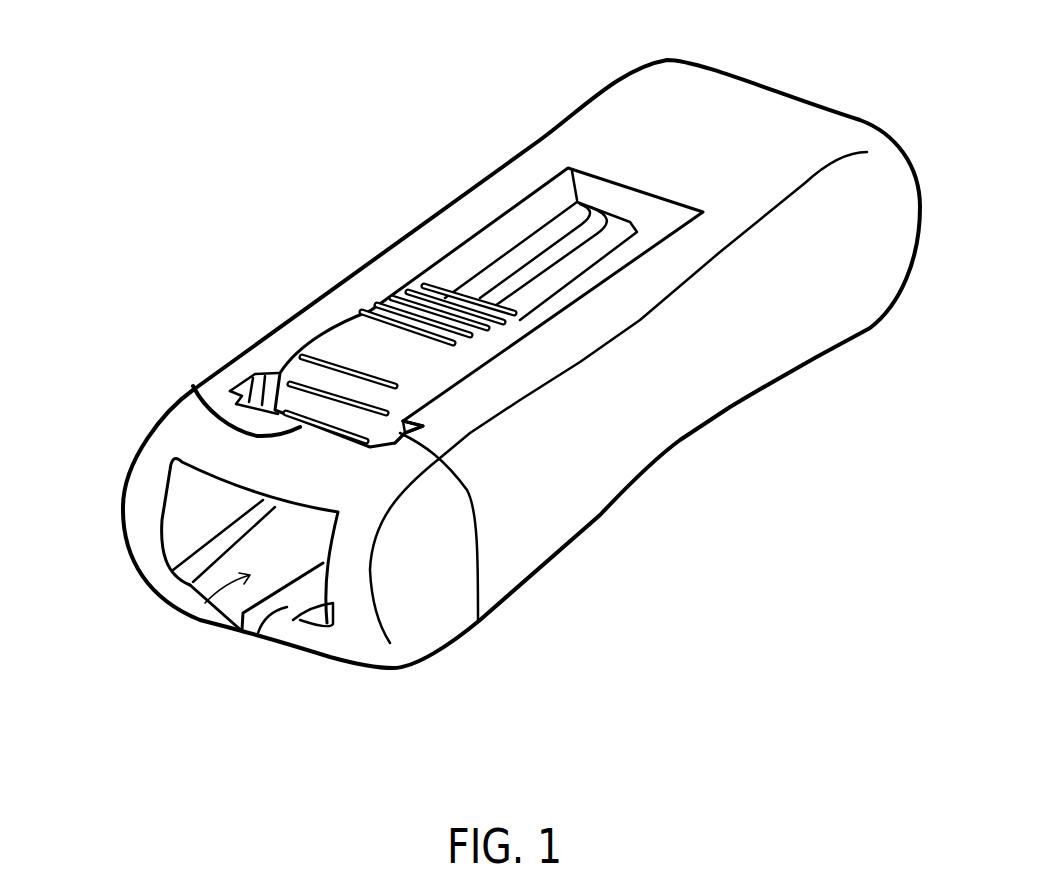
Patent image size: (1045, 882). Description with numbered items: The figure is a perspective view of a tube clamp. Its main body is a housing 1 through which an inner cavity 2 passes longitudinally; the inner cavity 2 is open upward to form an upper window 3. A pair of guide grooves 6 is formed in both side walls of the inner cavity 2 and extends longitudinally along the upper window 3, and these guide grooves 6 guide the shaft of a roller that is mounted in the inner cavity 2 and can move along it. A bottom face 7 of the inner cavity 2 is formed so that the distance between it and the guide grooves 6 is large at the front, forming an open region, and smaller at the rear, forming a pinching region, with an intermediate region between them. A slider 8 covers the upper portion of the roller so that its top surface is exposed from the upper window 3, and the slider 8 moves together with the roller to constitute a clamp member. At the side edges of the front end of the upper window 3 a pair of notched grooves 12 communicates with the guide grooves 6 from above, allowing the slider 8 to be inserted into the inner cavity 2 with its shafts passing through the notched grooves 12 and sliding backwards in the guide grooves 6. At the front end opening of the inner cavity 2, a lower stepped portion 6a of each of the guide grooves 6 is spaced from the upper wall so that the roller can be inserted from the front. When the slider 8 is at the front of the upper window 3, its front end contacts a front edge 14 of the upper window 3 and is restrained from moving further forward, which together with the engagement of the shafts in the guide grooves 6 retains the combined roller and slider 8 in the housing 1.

The housing 1 is at (562, 522).
The inner cavity 2 is at (203, 610).
The upper window 3 is at (637, 189).
The guide grooves 6 is at (513, 263).
The lower stepped portion 6a is at (207, 542).
The bottom face 7 is at (258, 633).
The slider 8 is at (345, 333).
The notched grooves 12 is at (252, 374).
The front edge 14 is at (196, 385).